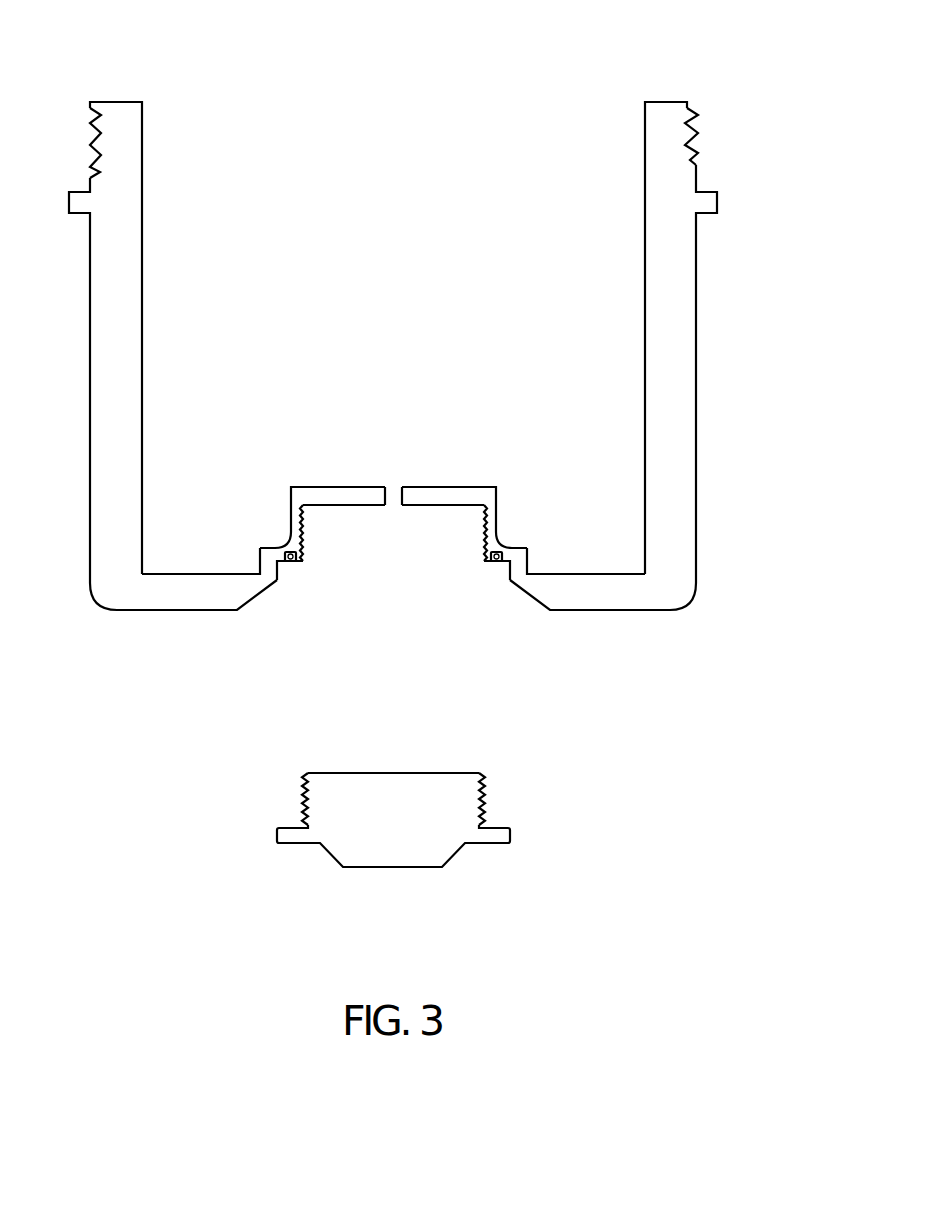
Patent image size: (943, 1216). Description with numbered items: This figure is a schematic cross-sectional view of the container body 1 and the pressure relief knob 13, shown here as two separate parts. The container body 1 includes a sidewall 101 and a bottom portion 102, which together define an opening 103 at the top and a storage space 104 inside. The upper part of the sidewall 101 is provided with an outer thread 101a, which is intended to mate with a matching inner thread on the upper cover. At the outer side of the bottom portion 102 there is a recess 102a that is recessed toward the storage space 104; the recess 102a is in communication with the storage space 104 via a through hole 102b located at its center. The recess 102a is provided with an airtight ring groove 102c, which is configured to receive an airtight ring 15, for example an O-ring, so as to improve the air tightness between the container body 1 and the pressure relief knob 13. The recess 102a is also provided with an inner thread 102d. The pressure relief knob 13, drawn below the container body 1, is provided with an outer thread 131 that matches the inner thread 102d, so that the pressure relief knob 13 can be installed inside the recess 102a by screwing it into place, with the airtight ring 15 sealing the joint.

The container body 1 is at (442, 393).
The sidewall 101 is at (442, 342).
The outer thread 101a is at (698, 140).
The bottom portion 102 is at (393, 549).
The recess 102a is at (503, 479).
The through hole 102b is at (392, 490).
The airtight ring groove 102c is at (292, 563).
The inner thread 102d is at (478, 520).
The opening 103 is at (395, 125).
The storage space 104 is at (398, 275).
The pressure relief knob 13 is at (420, 854).
The outer thread 131 is at (487, 792).
The airtight ring 15 is at (286, 548).